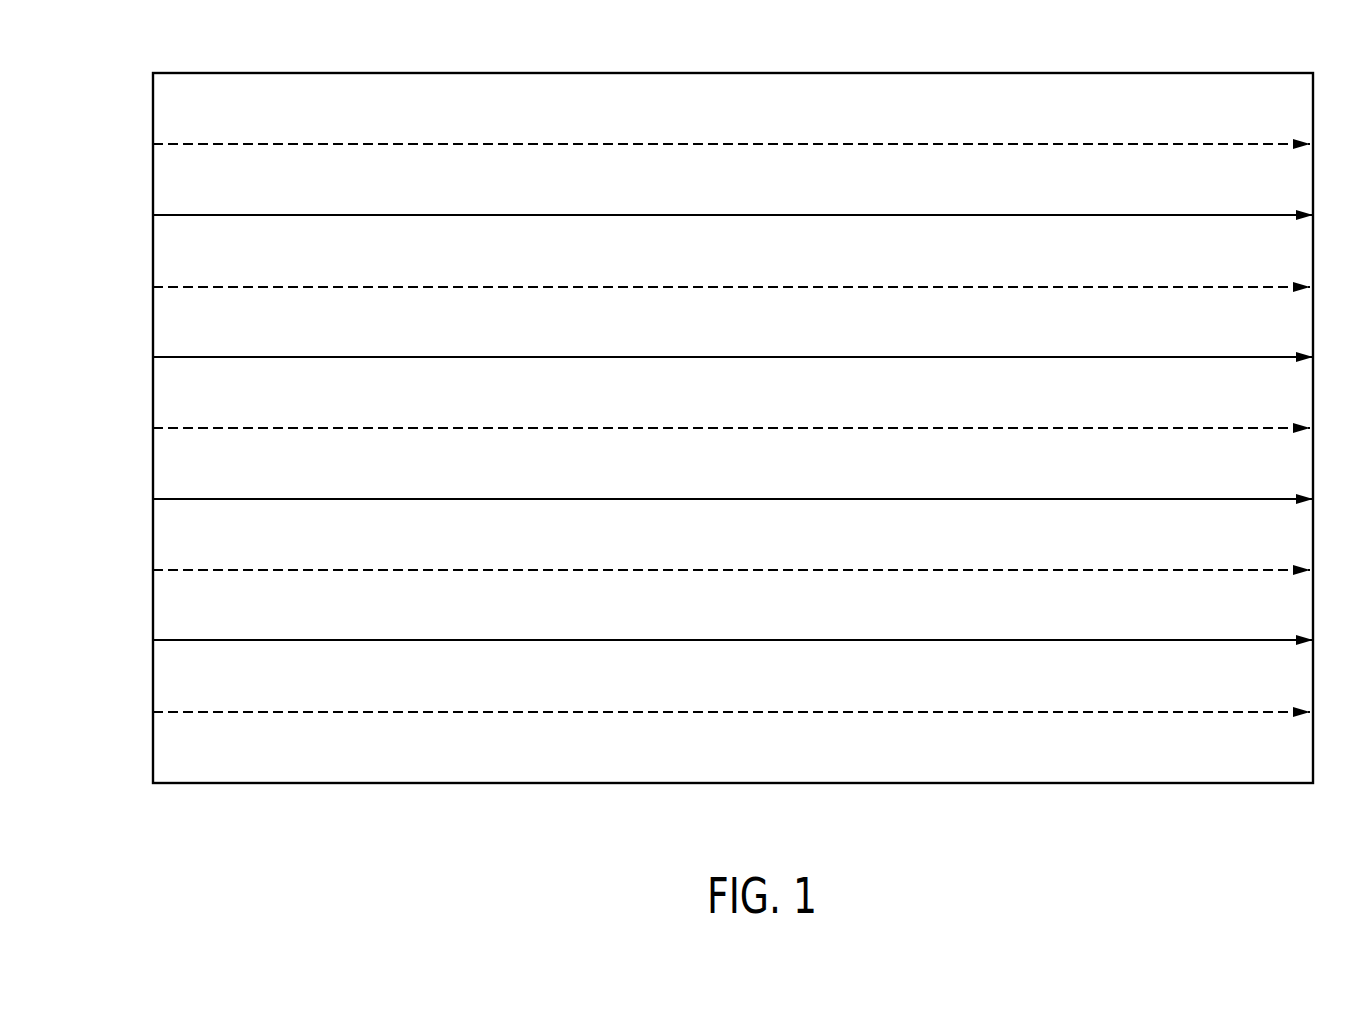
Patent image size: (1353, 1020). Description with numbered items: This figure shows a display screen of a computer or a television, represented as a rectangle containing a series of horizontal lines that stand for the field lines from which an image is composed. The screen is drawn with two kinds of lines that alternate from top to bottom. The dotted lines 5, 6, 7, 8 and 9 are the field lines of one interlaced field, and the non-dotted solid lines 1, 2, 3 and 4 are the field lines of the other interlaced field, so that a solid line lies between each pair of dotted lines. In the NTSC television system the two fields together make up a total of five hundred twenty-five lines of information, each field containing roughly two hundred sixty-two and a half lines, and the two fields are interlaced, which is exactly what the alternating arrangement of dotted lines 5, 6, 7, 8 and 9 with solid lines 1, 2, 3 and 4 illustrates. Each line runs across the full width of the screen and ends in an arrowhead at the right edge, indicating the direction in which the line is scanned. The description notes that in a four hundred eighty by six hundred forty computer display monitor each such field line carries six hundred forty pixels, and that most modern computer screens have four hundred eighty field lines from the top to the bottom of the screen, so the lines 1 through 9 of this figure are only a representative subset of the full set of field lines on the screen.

The second field line 1 is at (746, 215).
The second field line 2 is at (746, 357).
The second field line 3 is at (746, 499).
The second field line 4 is at (746, 640).
The first field line 5 is at (718, 144).
The first field line 6 is at (718, 287).
The first field line 7 is at (718, 428).
The first field line 8 is at (718, 570).
The first field line 9 is at (718, 712).